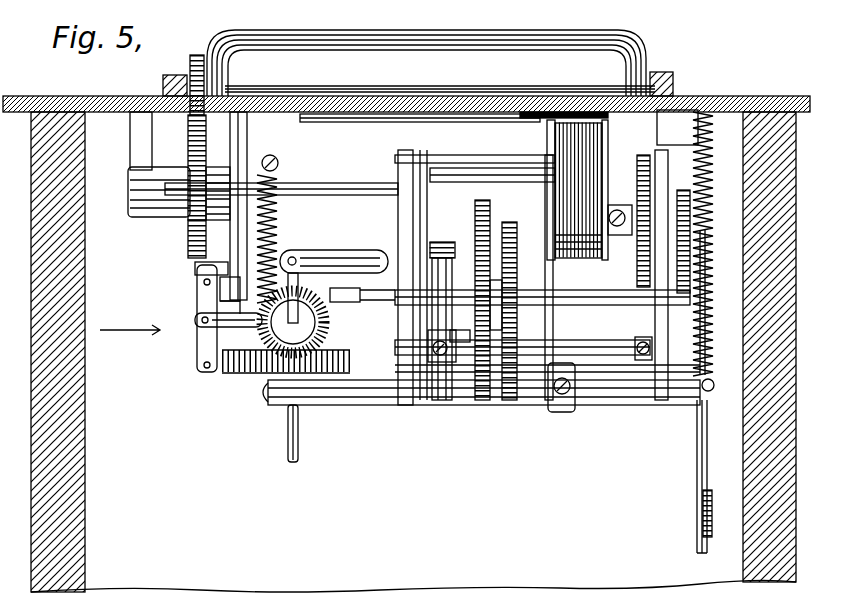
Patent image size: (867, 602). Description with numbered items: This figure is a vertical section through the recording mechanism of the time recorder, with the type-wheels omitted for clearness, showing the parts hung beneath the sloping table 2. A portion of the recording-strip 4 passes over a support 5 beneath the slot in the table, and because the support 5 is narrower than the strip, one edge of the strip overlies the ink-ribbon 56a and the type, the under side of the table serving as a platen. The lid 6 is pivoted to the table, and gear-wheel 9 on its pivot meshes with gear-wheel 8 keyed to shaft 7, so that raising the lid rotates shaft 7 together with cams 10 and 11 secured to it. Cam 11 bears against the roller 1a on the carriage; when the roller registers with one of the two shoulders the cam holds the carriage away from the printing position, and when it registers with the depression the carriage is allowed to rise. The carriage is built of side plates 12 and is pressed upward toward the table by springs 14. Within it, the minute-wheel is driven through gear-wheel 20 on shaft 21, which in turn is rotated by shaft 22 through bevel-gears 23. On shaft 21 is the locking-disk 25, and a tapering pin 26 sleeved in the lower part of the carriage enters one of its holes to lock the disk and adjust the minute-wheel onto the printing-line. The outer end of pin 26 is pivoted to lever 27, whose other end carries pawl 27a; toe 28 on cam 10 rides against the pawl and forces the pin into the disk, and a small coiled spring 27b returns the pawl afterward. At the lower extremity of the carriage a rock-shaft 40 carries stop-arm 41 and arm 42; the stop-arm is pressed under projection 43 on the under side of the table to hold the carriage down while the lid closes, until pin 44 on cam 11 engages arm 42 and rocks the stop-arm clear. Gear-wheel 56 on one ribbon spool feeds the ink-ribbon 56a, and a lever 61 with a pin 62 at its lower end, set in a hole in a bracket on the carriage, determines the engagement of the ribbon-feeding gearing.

The roller 1a is at (415, 334).
The table 2 is at (720, 97).
The recording-strip 4 is at (603, 113).
The support 5 is at (341, 121).
The lid 6 is at (515, 92).
The shaft 7 is at (345, 183).
The gear-wheel 8 is at (188, 244).
The gear-wheel 9 is at (197, 55).
The cam 10 is at (272, 240).
The cam 11 is at (413, 228).
The side plates 12 is at (390, 405).
The springs 14 is at (300, 253).
The gear-wheel 20 is at (517, 266).
The shaft 21 is at (598, 300).
The shaft 22 is at (299, 438).
The bevel-gears 23 is at (330, 333).
The locking-disk 25 is at (490, 216).
The pin 26 is at (262, 372).
The lever 27 is at (198, 343).
The pawl 27a is at (195, 270).
The coiled spring 27b is at (201, 313).
The toe 28 is at (232, 295).
The rock-shaft 40 is at (590, 348).
The stop-arm 41 is at (705, 158).
The arm 42 is at (452, 284).
The projection 43 is at (677, 127).
The pin 44 is at (452, 243).
The gear-wheel 56 is at (637, 265).
The ink-ribbon 56a is at (570, 123).
The lever 61 is at (708, 410).
The pin 62 is at (712, 514).